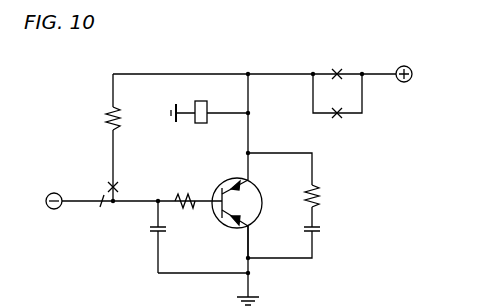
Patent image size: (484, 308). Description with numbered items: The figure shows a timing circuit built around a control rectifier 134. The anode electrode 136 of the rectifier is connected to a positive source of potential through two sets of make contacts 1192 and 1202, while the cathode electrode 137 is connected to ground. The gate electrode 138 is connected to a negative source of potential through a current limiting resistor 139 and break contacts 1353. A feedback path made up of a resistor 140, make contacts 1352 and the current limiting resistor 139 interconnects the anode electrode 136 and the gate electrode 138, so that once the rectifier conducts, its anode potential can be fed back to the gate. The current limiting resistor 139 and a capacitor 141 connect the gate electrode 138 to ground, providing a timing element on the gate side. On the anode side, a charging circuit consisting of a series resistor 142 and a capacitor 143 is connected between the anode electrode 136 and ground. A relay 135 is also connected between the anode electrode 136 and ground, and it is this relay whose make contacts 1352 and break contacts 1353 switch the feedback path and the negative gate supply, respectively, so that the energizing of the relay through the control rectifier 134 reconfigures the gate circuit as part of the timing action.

The resistor 140 is at (107, 117).
The relay 135 is at (204, 95).
The make contacts 1192 is at (338, 69).
The make contacts 1202 is at (339, 116).
The make contacts 1352 is at (109, 183).
The break contacts 1353 is at (101, 207).
The current limiting resistor 139 is at (190, 196).
The capacitor 141 is at (152, 229).
The control rectifier 134 is at (237, 183).
The anode electrode 136 is at (250, 167).
The gate electrode 138 is at (220, 212).
The cathode electrode 137 is at (252, 218).
The series resistor 142 is at (320, 197).
The capacitor 143 is at (320, 229).